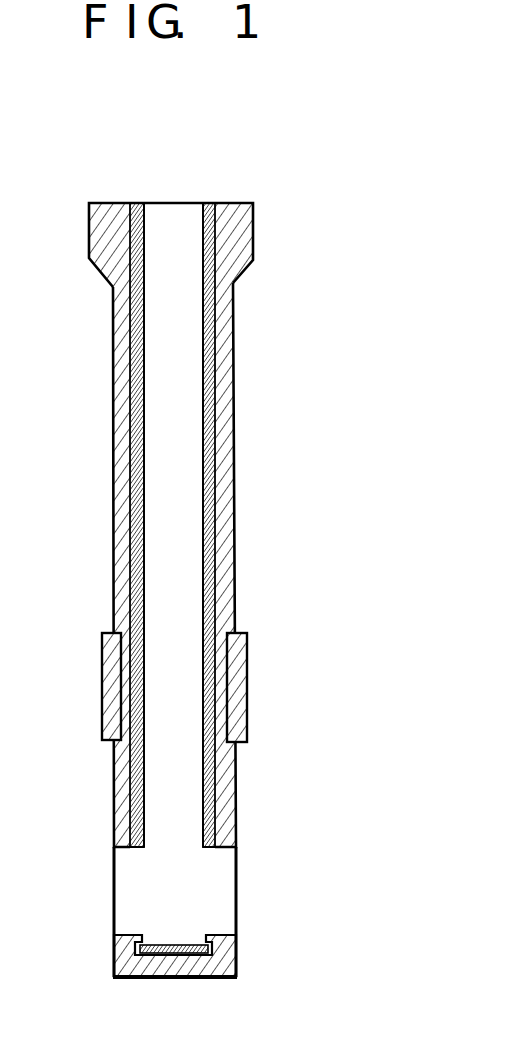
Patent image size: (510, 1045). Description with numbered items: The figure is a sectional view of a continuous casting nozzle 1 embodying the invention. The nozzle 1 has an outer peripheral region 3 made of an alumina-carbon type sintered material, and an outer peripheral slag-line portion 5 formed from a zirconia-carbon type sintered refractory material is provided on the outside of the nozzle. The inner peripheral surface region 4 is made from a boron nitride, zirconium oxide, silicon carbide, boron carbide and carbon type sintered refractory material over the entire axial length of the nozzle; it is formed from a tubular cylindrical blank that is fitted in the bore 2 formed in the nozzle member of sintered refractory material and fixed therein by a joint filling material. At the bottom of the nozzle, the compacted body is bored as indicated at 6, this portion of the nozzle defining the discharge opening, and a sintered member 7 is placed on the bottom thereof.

The nozzle 1 is at (238, 190).
The bore 2 is at (163, 525).
The outer peripheral region 3 is at (227, 370).
The inner peripheral surface region 4 is at (212, 470).
The outer peripheral slag-line portion 5 is at (248, 682).
The bottom boring / discharge opening portion 6 is at (237, 873).
The sintered member 7 is at (177, 943).